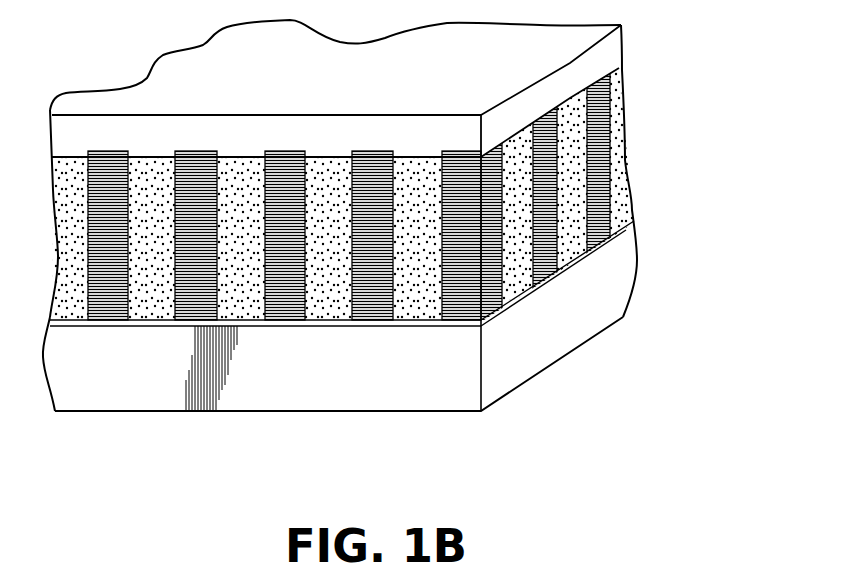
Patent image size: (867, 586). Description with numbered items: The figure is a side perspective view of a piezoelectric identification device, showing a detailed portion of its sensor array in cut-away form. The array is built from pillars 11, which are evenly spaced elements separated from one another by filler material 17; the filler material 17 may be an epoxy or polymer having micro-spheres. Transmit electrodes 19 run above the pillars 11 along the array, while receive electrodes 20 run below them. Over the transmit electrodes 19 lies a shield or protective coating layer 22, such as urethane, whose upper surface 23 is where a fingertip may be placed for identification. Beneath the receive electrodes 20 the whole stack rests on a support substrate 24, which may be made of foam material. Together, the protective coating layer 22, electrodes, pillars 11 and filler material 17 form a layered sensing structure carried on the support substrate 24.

The pillars 11 is at (115, 161).
The filler material 17 is at (328, 307).
The transmit electrodes 19 is at (615, 72).
The receive electrodes 20 is at (180, 325).
The protective coating layer 22 is at (615, 50).
The surface 23 is at (157, 80).
The support substrate 24 is at (625, 271).